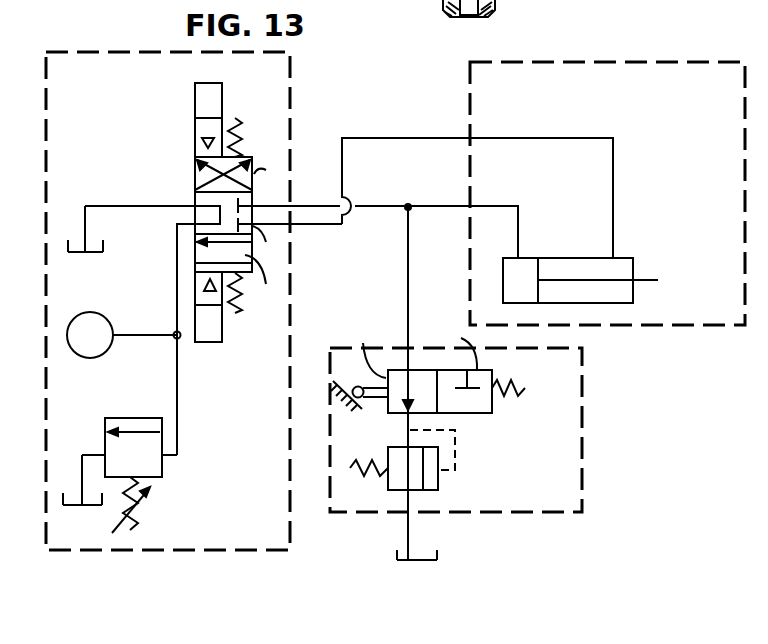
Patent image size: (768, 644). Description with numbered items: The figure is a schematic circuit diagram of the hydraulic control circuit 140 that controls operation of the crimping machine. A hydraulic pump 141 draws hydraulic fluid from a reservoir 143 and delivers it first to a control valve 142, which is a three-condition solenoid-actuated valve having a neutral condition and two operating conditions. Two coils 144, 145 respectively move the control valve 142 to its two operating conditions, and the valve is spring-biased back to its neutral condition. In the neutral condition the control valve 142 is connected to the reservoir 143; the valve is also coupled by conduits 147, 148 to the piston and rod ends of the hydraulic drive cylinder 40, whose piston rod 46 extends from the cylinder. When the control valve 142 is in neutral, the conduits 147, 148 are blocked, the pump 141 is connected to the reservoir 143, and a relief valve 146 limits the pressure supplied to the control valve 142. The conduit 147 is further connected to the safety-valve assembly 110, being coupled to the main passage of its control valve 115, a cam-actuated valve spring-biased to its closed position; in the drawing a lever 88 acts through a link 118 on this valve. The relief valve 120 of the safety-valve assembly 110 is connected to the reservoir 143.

The hydraulic control circuit 140 is at (397, 86).
The safety-valve assembly 110 is at (583, 478).
The coil 144 is at (195, 105).
The control valve 142 is at (194, 192).
The coil 145 is at (215, 337).
The reservoir 143 is at (100, 253).
The hydraulic pump 141 is at (103, 324).
The relief valve 146 is at (137, 432).
The conduit 148 is at (428, 135).
The conduit 147 is at (373, 208).
The hydraulic drive cylinder 40 is at (585, 264).
The piston rod 46 is at (648, 272).
The control valve 115 is at (460, 414).
The control lever 88 is at (348, 380).
The actuating link 118 is at (376, 399).
The relief valve 120 is at (388, 480).